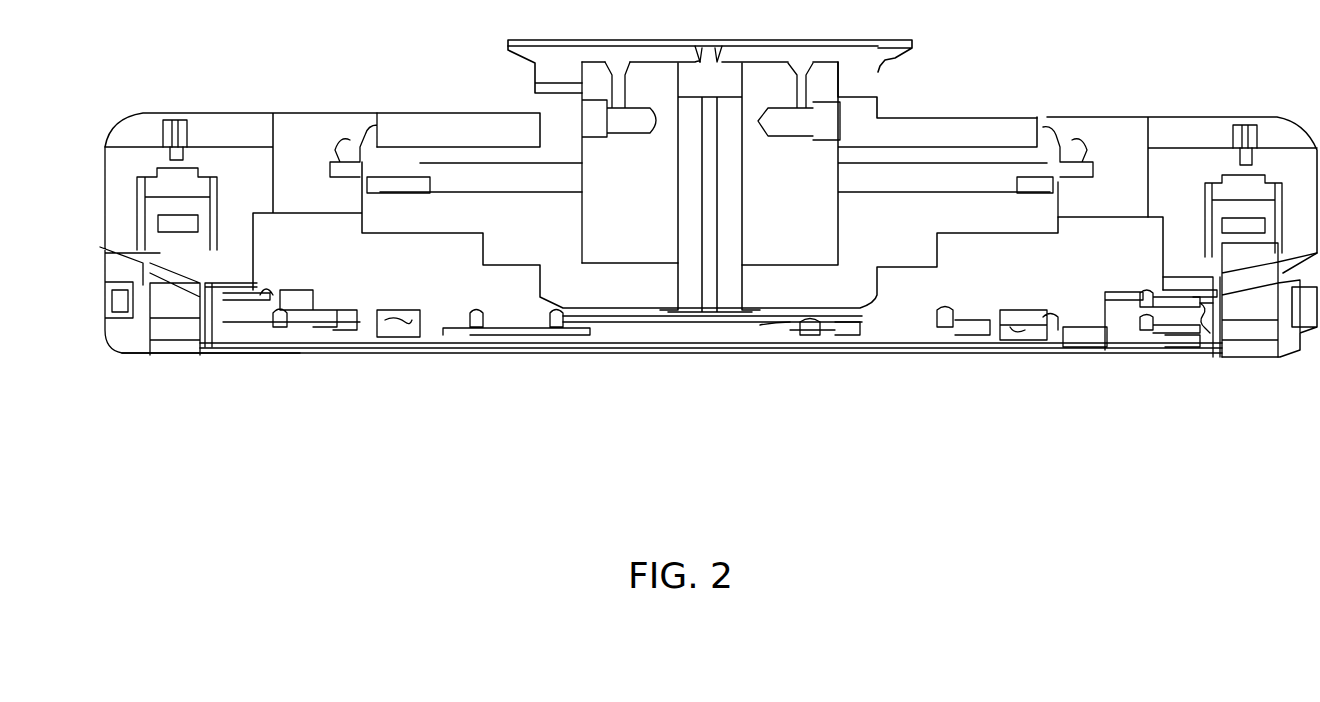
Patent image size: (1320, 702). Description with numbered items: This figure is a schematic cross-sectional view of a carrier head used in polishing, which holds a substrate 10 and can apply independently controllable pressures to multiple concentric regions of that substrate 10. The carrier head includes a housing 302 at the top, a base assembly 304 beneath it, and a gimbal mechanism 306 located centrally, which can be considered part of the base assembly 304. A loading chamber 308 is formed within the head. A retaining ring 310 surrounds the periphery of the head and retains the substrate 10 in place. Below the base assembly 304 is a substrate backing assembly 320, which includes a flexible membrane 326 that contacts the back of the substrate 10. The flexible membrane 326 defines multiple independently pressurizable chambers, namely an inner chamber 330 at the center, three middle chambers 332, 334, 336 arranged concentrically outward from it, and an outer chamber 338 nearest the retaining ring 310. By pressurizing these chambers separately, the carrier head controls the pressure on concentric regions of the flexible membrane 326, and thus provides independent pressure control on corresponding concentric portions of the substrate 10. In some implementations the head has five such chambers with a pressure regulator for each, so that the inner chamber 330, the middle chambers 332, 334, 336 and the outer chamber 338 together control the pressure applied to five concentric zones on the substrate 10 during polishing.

The substrate 10 is at (990, 338).
The housing 302 is at (880, 62).
The base assembly 304 is at (1170, 160).
The gimbal mechanism 306 is at (770, 320).
The loading chamber 308 is at (913, 233).
The retaining ring 310 is at (182, 340).
The substrate backing assembly 320 is at (1080, 365).
The flexible membrane 326 is at (588, 333).
The inner chamber 330 is at (665, 330).
The middle chamber 332 is at (845, 340).
The middle chamber 334 is at (997, 340).
The middle chamber 336 is at (1167, 337).
The outer chamber 338 is at (1195, 337).